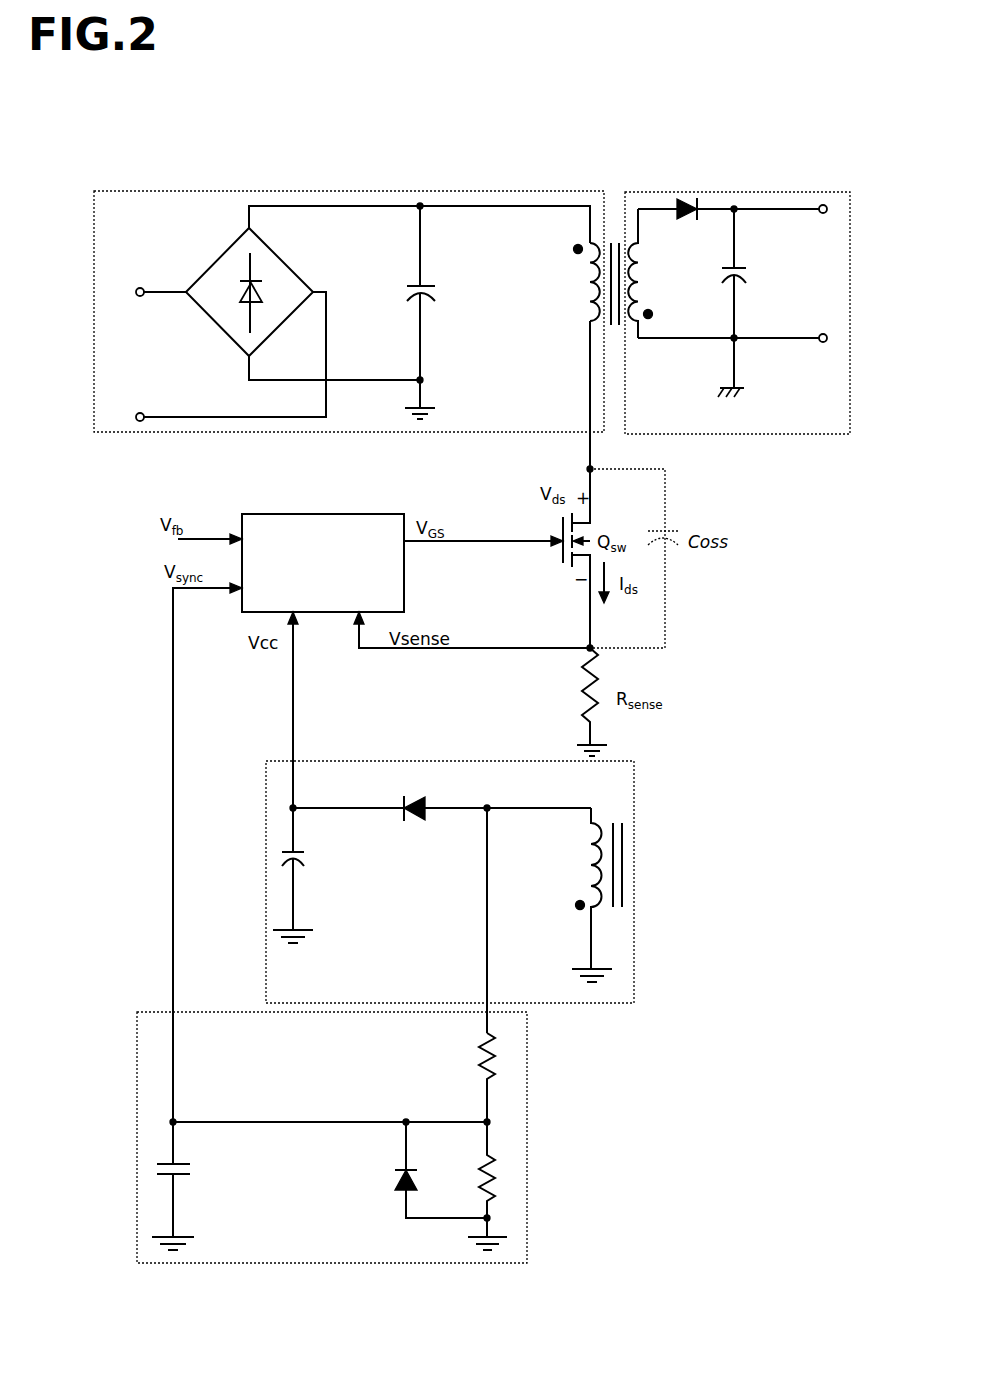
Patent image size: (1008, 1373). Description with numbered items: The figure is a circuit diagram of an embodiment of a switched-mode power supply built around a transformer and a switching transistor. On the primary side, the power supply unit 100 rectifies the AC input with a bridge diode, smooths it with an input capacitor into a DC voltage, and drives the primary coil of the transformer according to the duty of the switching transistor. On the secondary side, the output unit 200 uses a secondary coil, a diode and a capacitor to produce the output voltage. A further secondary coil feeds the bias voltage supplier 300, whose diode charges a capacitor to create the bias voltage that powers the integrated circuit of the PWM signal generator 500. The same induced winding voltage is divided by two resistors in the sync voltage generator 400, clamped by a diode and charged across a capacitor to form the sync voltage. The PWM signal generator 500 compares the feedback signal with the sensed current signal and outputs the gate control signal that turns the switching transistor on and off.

The power supply unit 100 is at (94, 222).
The output unit 200 is at (850, 330).
The bias voltage supplier 300 is at (634, 803).
The sync voltage generator 400 is at (527, 1103).
The PWM signal generator 500 is at (274, 514).